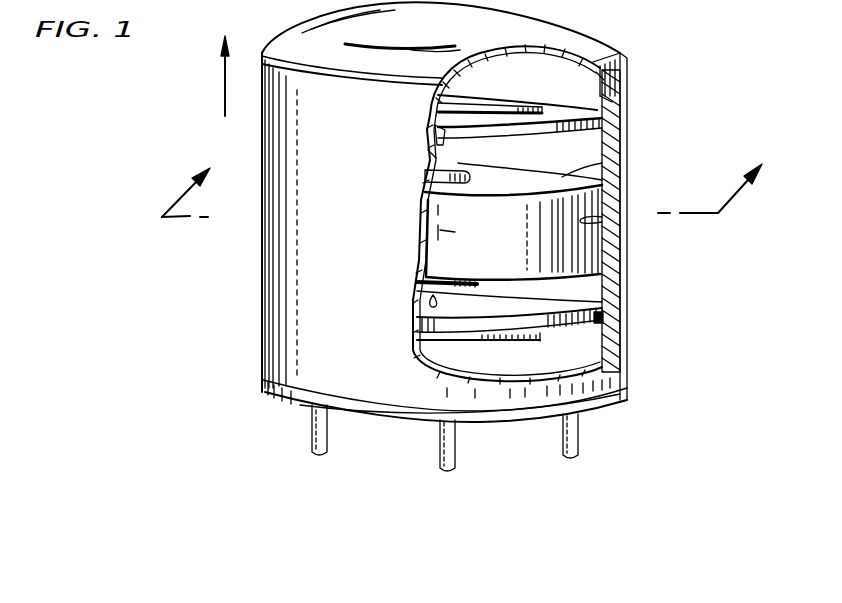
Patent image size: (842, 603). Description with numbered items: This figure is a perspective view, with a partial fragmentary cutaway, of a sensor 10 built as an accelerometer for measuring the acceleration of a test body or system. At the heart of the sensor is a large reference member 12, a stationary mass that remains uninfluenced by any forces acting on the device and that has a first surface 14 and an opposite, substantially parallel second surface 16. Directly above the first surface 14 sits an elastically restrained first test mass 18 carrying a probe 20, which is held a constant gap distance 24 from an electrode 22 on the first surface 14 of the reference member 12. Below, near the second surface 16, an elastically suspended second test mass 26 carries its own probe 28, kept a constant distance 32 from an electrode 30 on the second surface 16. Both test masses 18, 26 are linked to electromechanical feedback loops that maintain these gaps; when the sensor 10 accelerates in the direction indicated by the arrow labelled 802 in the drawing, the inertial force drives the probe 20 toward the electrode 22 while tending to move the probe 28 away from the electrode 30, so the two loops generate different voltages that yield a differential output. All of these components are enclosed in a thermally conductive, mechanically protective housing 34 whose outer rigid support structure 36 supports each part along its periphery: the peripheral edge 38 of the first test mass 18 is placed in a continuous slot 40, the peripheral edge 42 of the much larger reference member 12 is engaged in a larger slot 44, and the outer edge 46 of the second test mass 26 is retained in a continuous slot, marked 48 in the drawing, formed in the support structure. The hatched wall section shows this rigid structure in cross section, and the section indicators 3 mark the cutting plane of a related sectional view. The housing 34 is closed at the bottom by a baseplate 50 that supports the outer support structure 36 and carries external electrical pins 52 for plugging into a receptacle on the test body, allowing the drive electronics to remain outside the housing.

The sensor 10 is at (606, 26).
The reference member 12 is at (462, 236).
The first surface 14 is at (620, 141).
The second surface 16 is at (612, 278).
The first test mass 18 is at (556, 106).
The probe 20 is at (434, 145).
The electrode 22 is at (460, 170).
The gap distance 24 is at (436, 153).
The second test mass 26 is at (470, 327).
The probe 28 is at (430, 300).
The electrode 30 is at (445, 268).
The constant distance 32 is at (420, 284).
The housing 34 is at (300, 246).
The outer rigid support structure 36 is at (624, 341).
The peripheral edge 38 is at (612, 76).
The continuous slot 40 is at (622, 100).
The peripheral edge 42 is at (620, 157).
The larger slot 44 is at (614, 210).
The outer edge 46 is at (538, 310).
The insert 48 is at (614, 312).
The baseplate 50 is at (396, 412).
The pins 52 is at (308, 430).
The axis 802 is at (224, 86).
The section line 3 is at (451, 194).